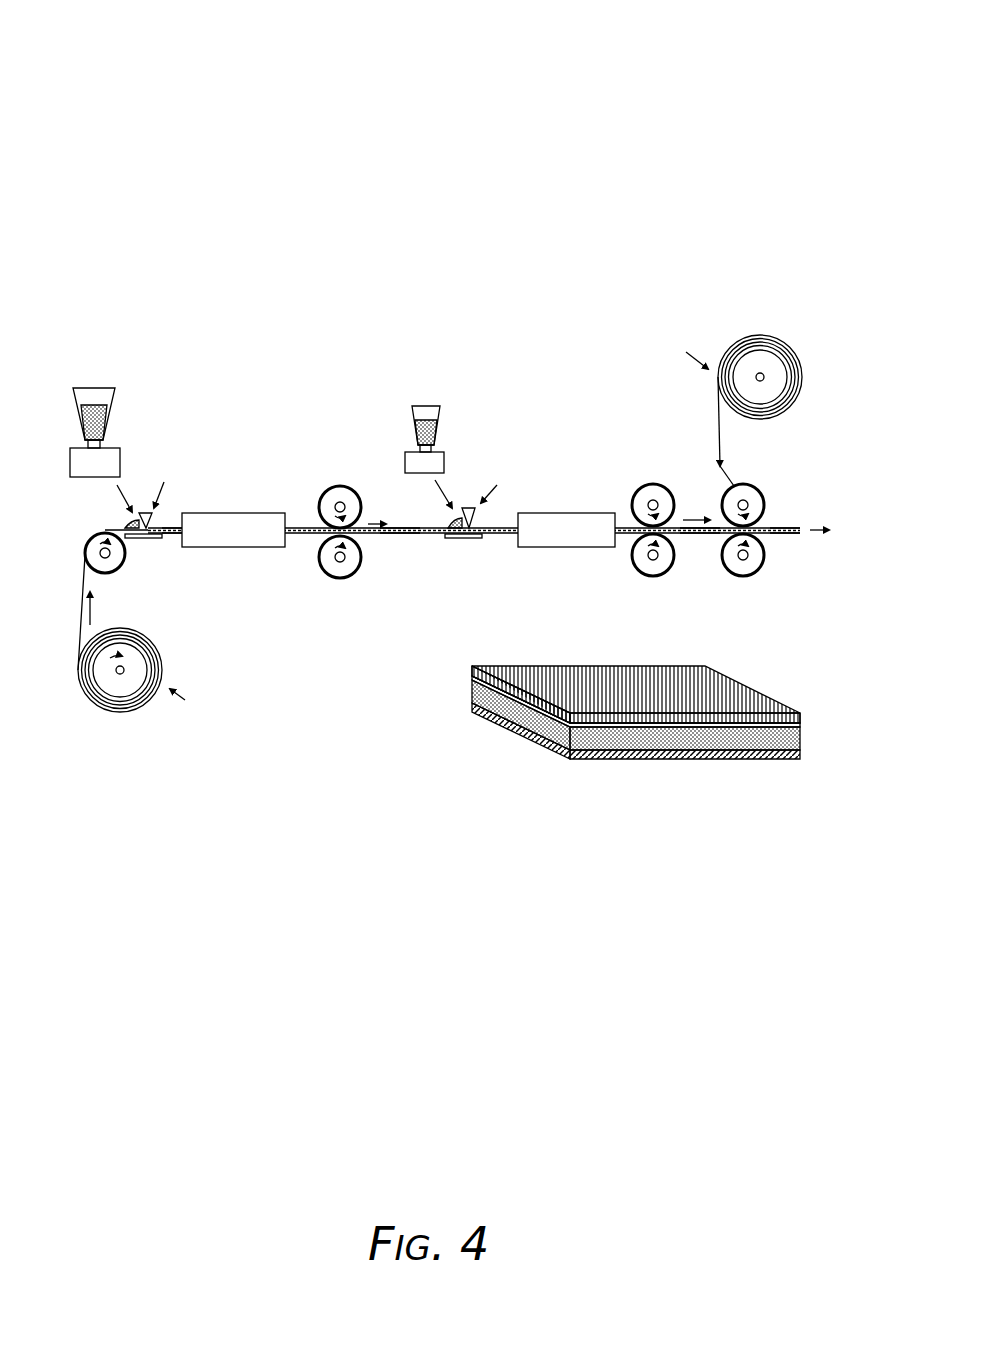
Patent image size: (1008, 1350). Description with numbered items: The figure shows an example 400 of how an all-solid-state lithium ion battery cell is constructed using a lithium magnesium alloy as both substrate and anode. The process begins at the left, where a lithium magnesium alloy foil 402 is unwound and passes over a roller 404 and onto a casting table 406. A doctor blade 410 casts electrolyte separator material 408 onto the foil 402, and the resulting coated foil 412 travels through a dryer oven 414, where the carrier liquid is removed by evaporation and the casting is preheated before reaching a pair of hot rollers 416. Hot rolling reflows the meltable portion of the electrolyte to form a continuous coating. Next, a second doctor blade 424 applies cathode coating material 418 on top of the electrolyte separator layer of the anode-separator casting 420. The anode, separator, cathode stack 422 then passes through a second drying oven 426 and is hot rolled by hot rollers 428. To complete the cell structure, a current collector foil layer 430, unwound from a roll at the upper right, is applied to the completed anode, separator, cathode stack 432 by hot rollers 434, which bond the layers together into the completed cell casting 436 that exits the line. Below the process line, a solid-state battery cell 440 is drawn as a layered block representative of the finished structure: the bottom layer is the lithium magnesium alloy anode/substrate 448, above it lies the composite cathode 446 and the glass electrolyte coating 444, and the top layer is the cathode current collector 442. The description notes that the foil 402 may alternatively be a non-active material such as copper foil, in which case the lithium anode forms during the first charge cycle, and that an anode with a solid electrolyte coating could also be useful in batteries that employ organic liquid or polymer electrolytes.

The all-solid-state lithium ion battery cell construction example 400 is at (645, 72).
The lithium magnesium alloy foil 402 is at (80, 602).
The roller 404 is at (118, 573).
The casting table 406 is at (143, 539).
The electrolyte separator material 408 is at (99, 406).
The doctor blade 410 is at (148, 519).
The coated foil 412 is at (172, 553).
The dryer oven 414 is at (239, 513).
The hot rollers 416 is at (343, 488).
The cathode coating material 418 is at (413, 431).
The anode-separator casting 420 is at (389, 535).
The anode, separator, cathode stack 422 is at (492, 539).
The doctor blade 424 is at (473, 519).
The drying oven 426 is at (582, 548).
The hot rollers 428 is at (649, 485).
The current collector foil layer 430 is at (718, 468).
The completed anode, separator, cathode stack 432 is at (694, 544).
The hot rollers 434 is at (759, 488).
The completed cell casting 436 is at (788, 537).
The solid-state battery cell 440 is at (679, 652).
The cathode current collector 442 is at (518, 670).
The glass electrolyte coating 444 is at (472, 677).
The composite cathode 446 is at (472, 690).
The lithium magnesium alloy anode/substrate 448 is at (503, 725).